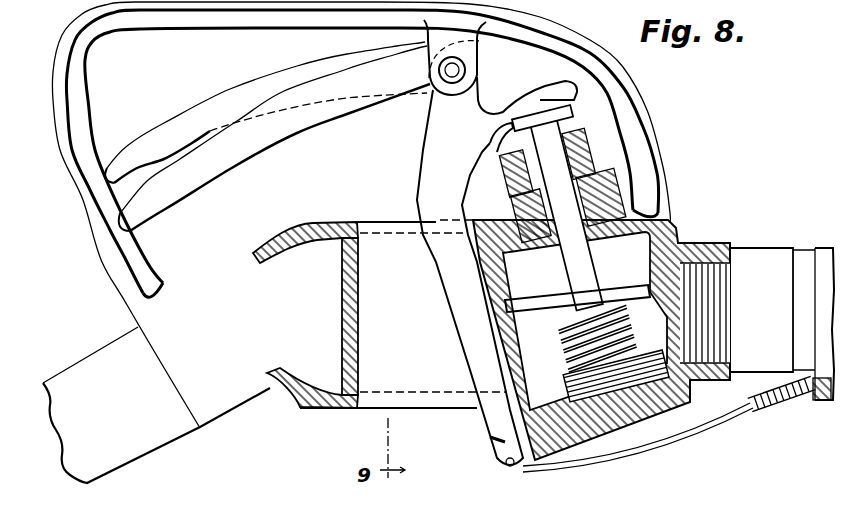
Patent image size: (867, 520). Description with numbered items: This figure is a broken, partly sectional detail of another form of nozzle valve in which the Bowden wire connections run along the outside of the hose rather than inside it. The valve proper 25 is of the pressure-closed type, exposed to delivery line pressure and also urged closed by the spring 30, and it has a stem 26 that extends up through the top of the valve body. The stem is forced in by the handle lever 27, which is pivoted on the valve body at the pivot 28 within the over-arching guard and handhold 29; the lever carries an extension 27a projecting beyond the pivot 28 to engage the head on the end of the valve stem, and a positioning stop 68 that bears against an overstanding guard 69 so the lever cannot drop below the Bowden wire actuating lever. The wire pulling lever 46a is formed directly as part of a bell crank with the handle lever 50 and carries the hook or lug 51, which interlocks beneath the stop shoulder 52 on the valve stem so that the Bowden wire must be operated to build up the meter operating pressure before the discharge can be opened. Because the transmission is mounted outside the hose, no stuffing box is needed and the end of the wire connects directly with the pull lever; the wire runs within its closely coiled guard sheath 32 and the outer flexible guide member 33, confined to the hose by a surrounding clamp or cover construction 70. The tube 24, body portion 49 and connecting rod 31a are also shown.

The tube 24 is at (156, 405).
The valve proper 25 is at (613, 303).
The stem 26 is at (567, 262).
The handle lever 27 is at (176, 113).
The extension 27a is at (527, 95).
The pivot 28 is at (449, 74).
The over-arching guard and handhold 29 is at (190, 3).
The spring 30 is at (633, 335).
The connecting rod 31a is at (630, 447).
The guard sheath 32 is at (757, 410).
The outer flexible guide member 33 is at (812, 400).
The wire pulling lever 46a is at (490, 417).
The handle body 49 is at (380, 314).
The handle lever 50 is at (187, 187).
The hook or lug 51 is at (515, 130).
The stop shoulder 52 is at (502, 122).
The positioning stop 68 is at (513, 47).
The overstanding guard 69 is at (580, 22).
The clamp or cover construction 70 is at (818, 265).